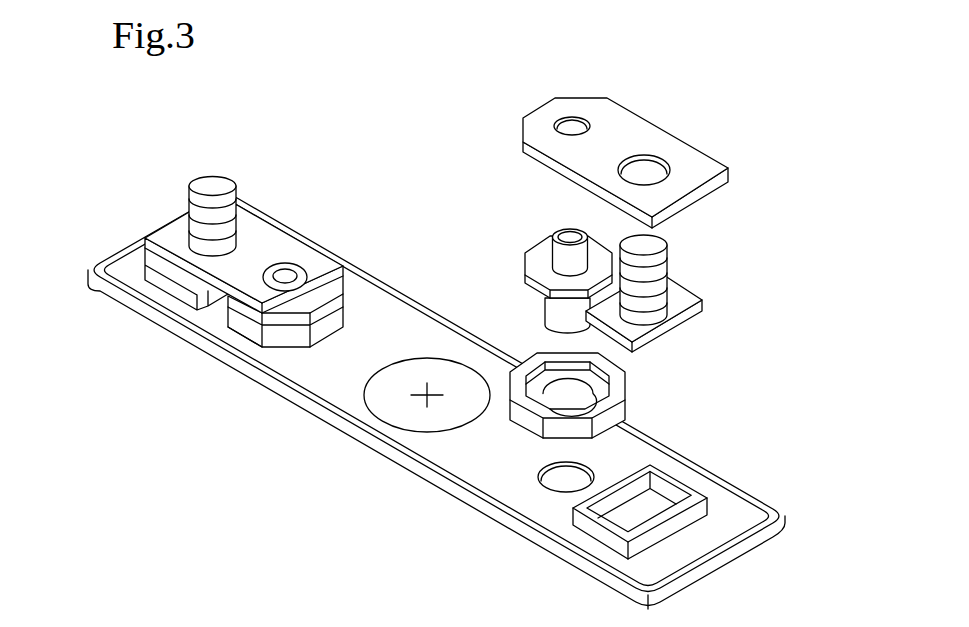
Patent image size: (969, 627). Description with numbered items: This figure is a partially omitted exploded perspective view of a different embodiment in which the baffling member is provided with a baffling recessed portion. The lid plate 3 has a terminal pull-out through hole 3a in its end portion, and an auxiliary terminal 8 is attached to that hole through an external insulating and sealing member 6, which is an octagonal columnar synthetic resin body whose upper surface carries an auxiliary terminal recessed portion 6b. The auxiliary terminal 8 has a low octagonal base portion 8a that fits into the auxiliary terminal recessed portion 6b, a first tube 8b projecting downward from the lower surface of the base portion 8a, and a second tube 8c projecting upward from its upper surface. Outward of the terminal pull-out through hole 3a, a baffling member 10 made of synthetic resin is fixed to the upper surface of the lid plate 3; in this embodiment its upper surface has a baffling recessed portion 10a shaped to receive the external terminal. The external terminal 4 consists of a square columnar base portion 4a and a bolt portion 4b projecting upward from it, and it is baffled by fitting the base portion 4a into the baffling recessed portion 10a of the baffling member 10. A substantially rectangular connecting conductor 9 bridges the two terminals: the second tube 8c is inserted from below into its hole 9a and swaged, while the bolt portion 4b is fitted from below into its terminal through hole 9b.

The lid plate 3 is at (436, 402).
The terminal pull-out through hole 3a is at (580, 466).
The external terminal 4 is at (446, 236).
The base portion 4a is at (698, 310).
The bolt portion 4b is at (216, 185).
The external insulating and sealing member 6 is at (426, 371).
The auxiliary terminal recessed portion 6b is at (552, 366).
The auxiliary terminal 8 is at (412, 244).
The base portion 8a is at (540, 258).
The first tube 8b is at (545, 312).
The second tube 8c is at (566, 232).
The connecting conductor 9 is at (434, 193).
The hole 9a is at (570, 127).
The terminal through hole 9b is at (660, 168).
The baffling member 10 is at (427, 418).
The baffling recessed portion 10a is at (672, 486).